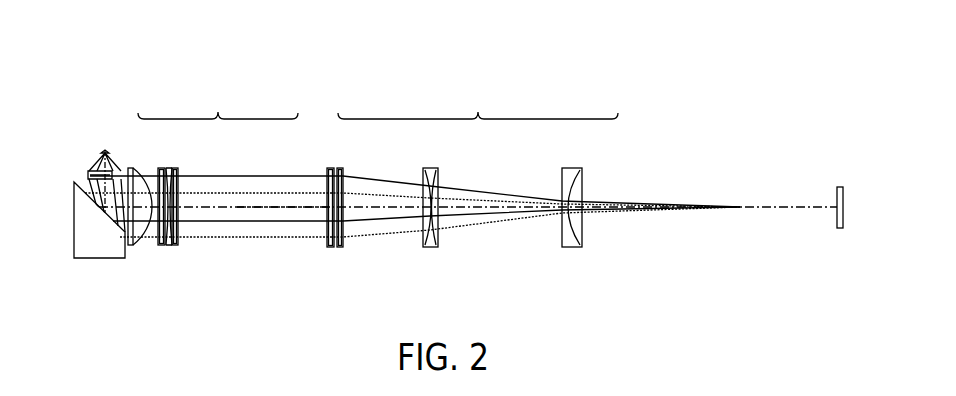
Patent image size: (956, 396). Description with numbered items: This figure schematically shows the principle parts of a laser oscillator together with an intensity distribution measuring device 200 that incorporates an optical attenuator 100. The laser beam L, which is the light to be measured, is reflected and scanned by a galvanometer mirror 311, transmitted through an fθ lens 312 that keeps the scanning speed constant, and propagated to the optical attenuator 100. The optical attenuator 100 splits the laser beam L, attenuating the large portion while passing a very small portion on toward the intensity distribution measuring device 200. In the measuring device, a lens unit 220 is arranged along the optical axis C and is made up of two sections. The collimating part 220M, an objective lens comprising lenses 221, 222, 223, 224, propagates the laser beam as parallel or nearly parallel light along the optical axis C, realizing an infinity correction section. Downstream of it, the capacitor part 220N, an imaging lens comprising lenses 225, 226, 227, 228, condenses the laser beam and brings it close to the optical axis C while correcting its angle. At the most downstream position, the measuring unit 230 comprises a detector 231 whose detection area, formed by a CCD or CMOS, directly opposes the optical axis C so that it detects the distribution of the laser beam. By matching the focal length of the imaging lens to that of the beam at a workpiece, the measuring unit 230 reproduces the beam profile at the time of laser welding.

The optical attenuator 100 is at (94, 266).
The galvanometer mirror 311 is at (107, 155).
The fθ lens 312 is at (114, 177).
The laser beam L is at (120, 230).
The optical axis C is at (237, 207).
The intensity distribution measuring device 200 is at (622, 66).
The lens unit 220 is at (535, 86).
The collimating part 220M is at (218, 102).
The capacitor part 220N is at (478, 102).
The lens 221 is at (132, 168).
The lens 222 is at (162, 168).
The lens 223 is at (169, 168).
The lens 224 is at (176, 168).
The lens 225 is at (330, 168).
The lens 226 is at (340, 168).
The lens 227 is at (428, 168).
The lens 228 is at (566, 168).
The measuring unit 230 is at (773, 136).
The detector 231 is at (837, 187).